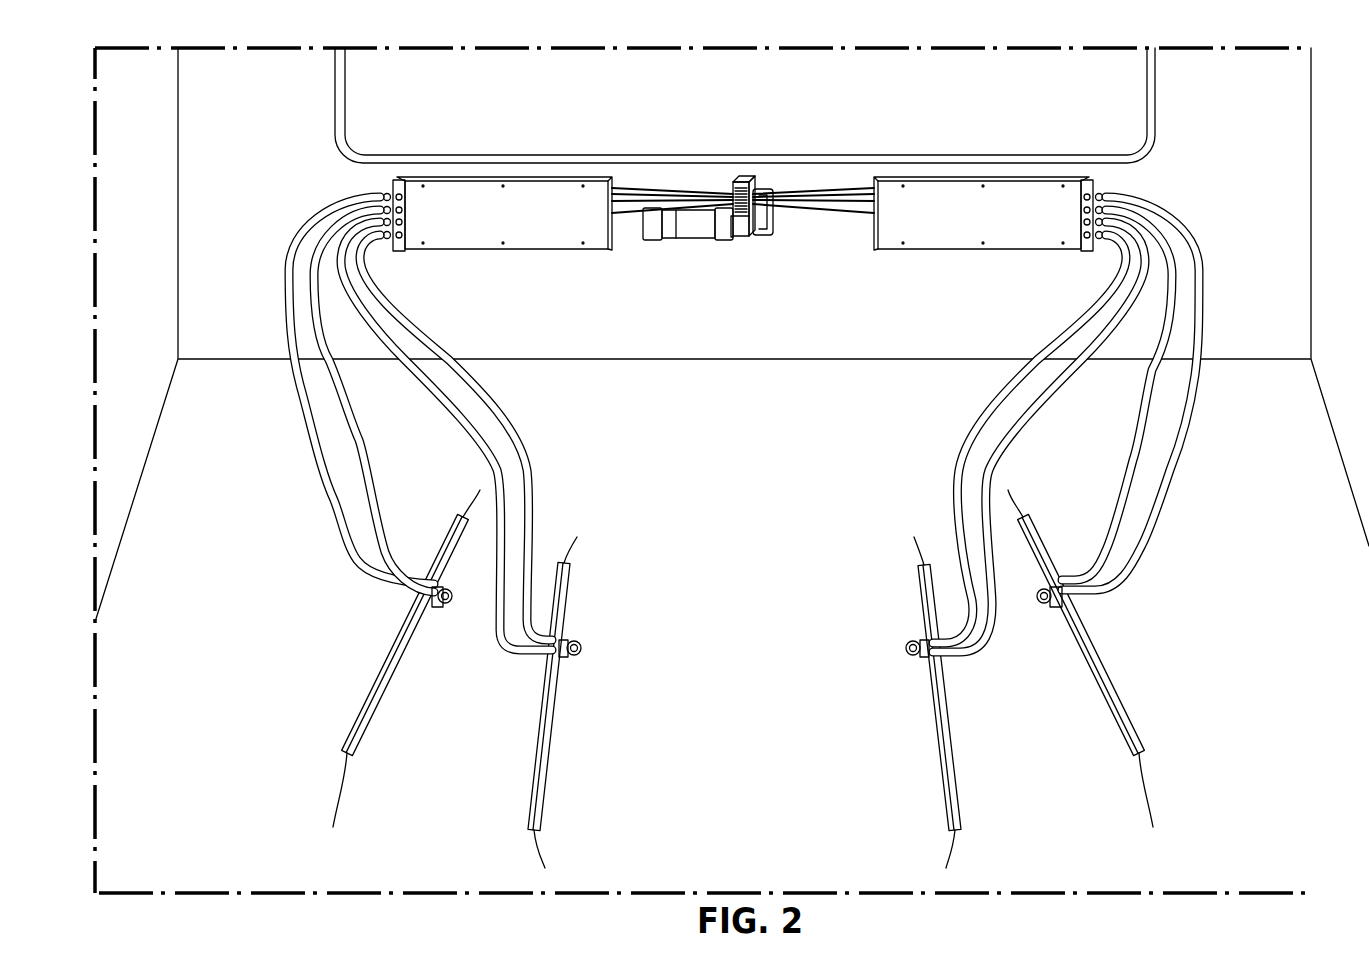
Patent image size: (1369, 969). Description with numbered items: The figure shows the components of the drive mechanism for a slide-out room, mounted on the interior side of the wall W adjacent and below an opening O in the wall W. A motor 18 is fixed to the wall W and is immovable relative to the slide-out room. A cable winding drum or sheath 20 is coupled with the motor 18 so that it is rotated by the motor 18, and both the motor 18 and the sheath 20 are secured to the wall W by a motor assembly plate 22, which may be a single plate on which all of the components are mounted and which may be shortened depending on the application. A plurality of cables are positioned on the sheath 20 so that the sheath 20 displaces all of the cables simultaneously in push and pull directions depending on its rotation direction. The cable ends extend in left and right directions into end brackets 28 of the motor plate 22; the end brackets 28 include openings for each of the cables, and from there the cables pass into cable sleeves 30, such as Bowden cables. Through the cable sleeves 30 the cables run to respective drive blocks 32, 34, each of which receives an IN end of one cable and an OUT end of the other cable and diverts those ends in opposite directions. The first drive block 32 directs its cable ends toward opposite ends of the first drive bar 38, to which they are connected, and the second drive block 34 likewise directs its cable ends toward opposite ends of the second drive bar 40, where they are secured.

The wall W is at (208, 93).
The opening O is at (540, 98).
The motor 18 is at (688, 226).
The cable winding drum or sheath 20 is at (752, 190).
The motor assembly plate 22 is at (786, 252).
The end brackets 28 is at (412, 265).
The cable sleeves 30 is at (310, 417).
The first drive block 32 is at (560, 665).
The second drive block 34 is at (928, 657).
The first drive bar 38 is at (540, 760).
The second drive bar 40 is at (925, 600).